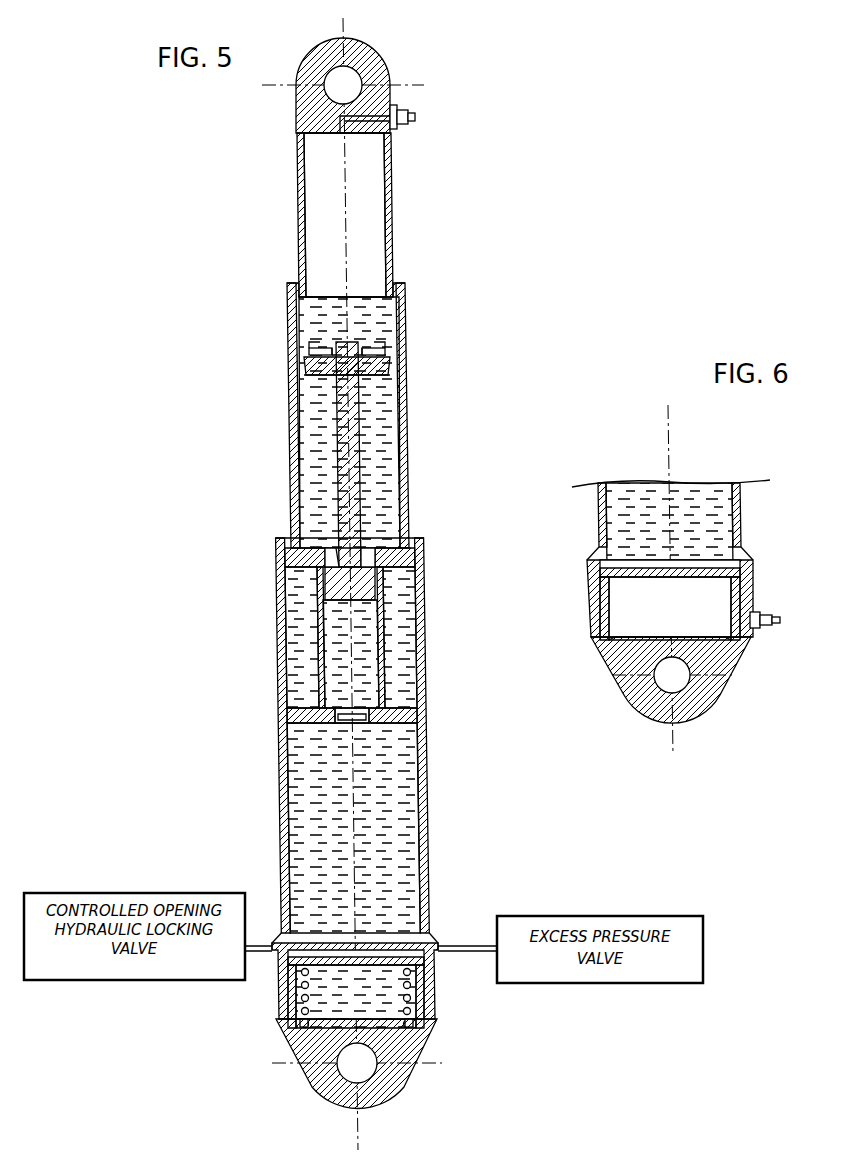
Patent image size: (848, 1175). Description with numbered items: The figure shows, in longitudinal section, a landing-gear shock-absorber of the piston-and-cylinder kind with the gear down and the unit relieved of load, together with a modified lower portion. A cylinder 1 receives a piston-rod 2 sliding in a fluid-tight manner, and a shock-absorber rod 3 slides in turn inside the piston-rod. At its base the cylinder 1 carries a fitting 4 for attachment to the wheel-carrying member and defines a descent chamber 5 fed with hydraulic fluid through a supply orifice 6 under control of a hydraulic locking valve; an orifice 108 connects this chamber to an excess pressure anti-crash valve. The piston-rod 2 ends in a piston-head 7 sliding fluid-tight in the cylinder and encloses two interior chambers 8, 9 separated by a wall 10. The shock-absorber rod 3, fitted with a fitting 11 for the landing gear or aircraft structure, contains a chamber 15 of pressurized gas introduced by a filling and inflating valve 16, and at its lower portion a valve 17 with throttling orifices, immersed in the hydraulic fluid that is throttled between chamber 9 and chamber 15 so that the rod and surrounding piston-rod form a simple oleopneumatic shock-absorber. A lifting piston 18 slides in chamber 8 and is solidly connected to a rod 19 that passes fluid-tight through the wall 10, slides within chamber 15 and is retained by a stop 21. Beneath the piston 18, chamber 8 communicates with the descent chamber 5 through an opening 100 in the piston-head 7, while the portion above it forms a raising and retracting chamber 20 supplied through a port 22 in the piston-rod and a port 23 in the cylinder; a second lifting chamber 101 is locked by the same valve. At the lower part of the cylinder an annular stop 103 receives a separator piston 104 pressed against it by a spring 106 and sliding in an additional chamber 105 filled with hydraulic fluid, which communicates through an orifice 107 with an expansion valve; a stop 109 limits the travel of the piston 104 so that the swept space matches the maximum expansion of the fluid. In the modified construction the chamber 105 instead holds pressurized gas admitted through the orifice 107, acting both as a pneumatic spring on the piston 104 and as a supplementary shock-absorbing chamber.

In FIG. 5, the cylinder 1 is at (427, 848).
In FIG. 6, the cylinder 1 is at (742, 492).
In FIG. 5, the piston-rod 2 is at (405, 416).
In FIG. 5, the shock-absorber rod 3 is at (392, 202).
In FIG. 5, the fitting 4 is at (385, 1100).
In FIG. 6, the fitting 4 is at (700, 712).
In FIG. 5, the descent chamber 5 is at (320, 824).
In FIG. 6, the descent chamber 5 is at (638, 498).
In FIG. 5, the supply orifice 6 is at (283, 985).
In FIG. 6, the supply orifice 6 is at (592, 560).
In FIG. 5, the piston-head 7 is at (325, 724).
In FIG. 5, the interior chamber 8 is at (345, 665).
In FIG. 5, the interior chamber 9 is at (395, 485).
In FIG. 5, the wall 10 is at (385, 558).
In FIG. 5, the fitting 11 is at (371, 60).
In FIG. 5, the chamber 15 is at (320, 206).
In FIG. 5, the filling and inflating valve 16 is at (404, 112).
In FIG. 5, the valve 17 is at (383, 345).
In FIG. 5, the piston 18 is at (370, 590).
In FIG. 5, the rod 19 is at (345, 440).
In FIG. 5, the chamber 20 is at (303, 548).
In FIG. 5, the stop 21 is at (343, 347).
In FIG. 5, the port 22 is at (315, 577).
In FIG. 5, the port 23 is at (283, 575).
In FIG. 5, the opening 100 is at (358, 720).
In FIG. 5, the chamber 101 is at (405, 672).
In FIG. 5, the annular stop 103 is at (300, 945).
In FIG. 6, the annular stop 103 is at (723, 560).
In FIG. 5, the separator piston 104 is at (370, 957).
In FIG. 6, the separator piston 104 is at (655, 567).
In FIG. 5, the additional chamber 105 is at (356, 996).
In FIG. 6, the additional chamber 105 is at (651, 610).
In FIG. 5, the spring 106 is at (420, 1015).
In FIG. 5, the orifice 107 is at (285, 1020).
In FIG. 6, the orifice 107 is at (762, 620).
In FIG. 5, the orifice 108 is at (437, 960).
In FIG. 6, the orifice 108 is at (753, 560).
In FIG. 5, the stop 109 is at (420, 1027).
In FIG. 6, the stop 109 is at (742, 648).